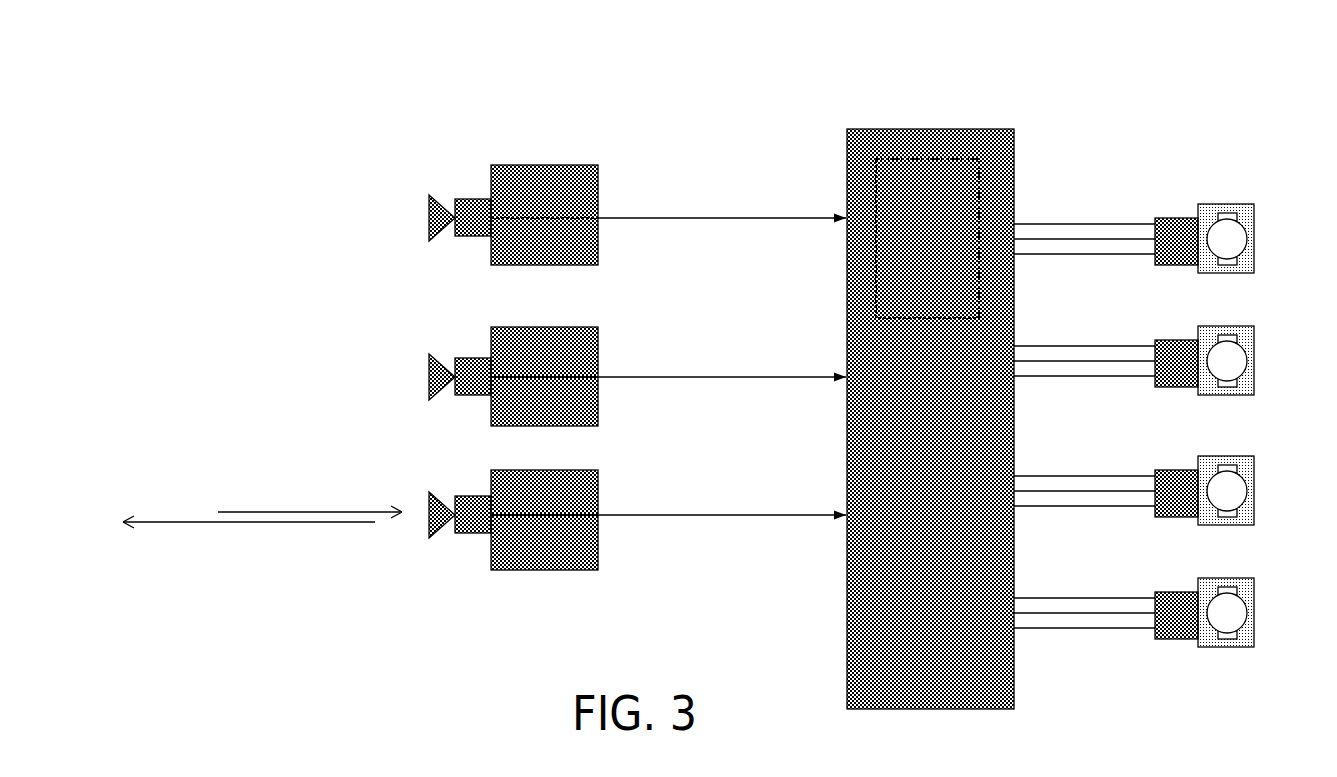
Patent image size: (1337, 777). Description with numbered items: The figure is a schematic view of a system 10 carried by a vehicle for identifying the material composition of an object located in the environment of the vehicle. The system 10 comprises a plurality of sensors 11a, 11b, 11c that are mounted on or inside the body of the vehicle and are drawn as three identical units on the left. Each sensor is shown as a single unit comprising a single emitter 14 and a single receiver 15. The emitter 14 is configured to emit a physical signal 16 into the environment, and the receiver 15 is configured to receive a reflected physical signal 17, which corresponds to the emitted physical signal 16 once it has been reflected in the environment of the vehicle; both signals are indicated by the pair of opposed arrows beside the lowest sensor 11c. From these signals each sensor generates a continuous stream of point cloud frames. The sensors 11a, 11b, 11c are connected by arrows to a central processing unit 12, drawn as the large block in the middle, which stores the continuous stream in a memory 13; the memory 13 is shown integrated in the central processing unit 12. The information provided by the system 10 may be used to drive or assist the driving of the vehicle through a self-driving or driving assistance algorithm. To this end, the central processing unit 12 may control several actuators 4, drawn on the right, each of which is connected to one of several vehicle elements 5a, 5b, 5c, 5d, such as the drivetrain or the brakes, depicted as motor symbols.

The system 10 is at (773, 82).
The sensor 11a is at (417, 172).
The sensor 11b is at (417, 332).
The sensor 11c is at (417, 480).
The central processing unit 12 is at (930, 419).
The memory 13 is at (927, 238).
The emitter 14 is at (544, 340).
The receiver 15 is at (544, 394).
The physical signal 16 is at (249, 541).
The reflected physical signal 17 is at (310, 495).
The actuator 4 is at (1174, 220).
The vehicle element 5a is at (1254, 261).
The vehicle element 5b is at (1254, 383).
The vehicle element 5c is at (1254, 513).
The vehicle element 5d is at (1254, 635).